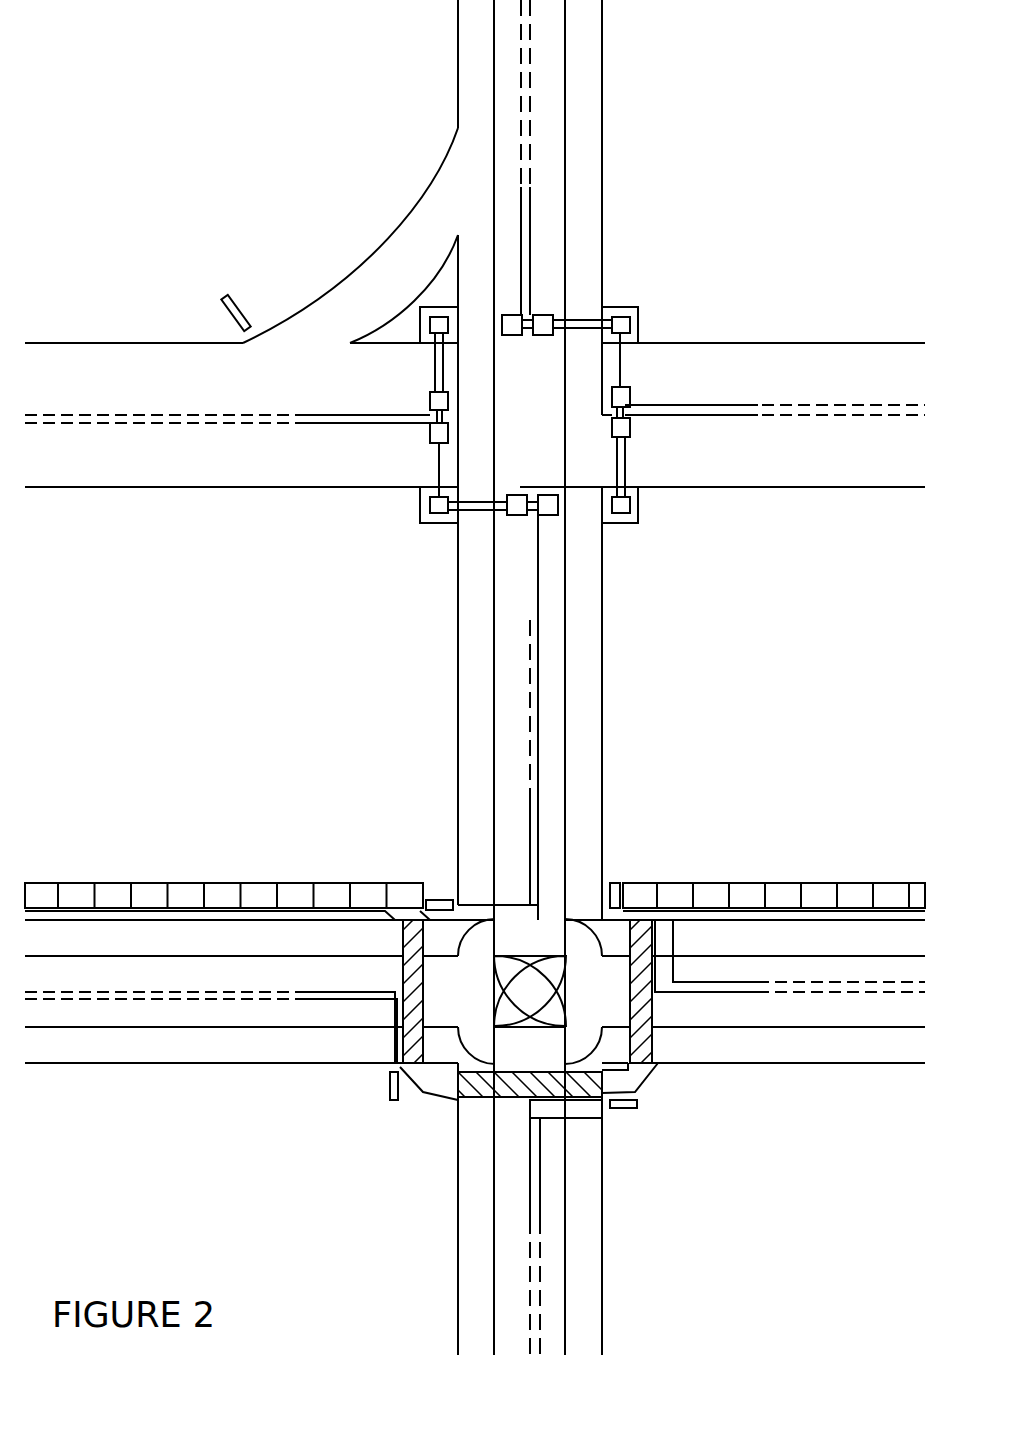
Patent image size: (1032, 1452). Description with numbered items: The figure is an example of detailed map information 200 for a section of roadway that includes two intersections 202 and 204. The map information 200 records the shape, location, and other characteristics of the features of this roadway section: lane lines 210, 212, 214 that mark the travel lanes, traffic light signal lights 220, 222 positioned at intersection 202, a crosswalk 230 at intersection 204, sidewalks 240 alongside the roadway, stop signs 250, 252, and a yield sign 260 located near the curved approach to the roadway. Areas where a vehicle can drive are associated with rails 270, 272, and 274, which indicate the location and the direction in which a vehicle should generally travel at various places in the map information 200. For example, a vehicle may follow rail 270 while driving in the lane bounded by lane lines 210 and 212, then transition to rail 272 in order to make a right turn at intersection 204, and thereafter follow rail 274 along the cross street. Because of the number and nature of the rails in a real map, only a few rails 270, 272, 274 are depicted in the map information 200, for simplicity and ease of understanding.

The map information 200 is at (152, 1271).
The intersection 202 is at (529, 415).
The intersection 204 is at (530, 991).
The lane line 210 is at (113, 999).
The lane line 212 is at (182, 1063).
The lane line 214 is at (532, 91).
The traffic light signal light 220 is at (433, 432).
The traffic light signal light 222 is at (443, 396).
The crosswalk 230 is at (482, 1037).
The sidewalk 240 is at (702, 883).
The stop sign 250 is at (440, 900).
The stop sign 252 is at (637, 1108).
The yield sign 260 is at (215, 307).
The rail 270 is at (187, 1027).
The rail 272 is at (392, 1100).
The rail 274 is at (493, 1295).